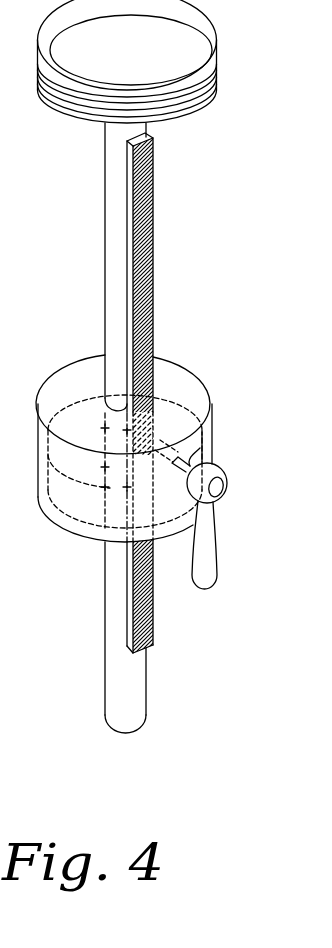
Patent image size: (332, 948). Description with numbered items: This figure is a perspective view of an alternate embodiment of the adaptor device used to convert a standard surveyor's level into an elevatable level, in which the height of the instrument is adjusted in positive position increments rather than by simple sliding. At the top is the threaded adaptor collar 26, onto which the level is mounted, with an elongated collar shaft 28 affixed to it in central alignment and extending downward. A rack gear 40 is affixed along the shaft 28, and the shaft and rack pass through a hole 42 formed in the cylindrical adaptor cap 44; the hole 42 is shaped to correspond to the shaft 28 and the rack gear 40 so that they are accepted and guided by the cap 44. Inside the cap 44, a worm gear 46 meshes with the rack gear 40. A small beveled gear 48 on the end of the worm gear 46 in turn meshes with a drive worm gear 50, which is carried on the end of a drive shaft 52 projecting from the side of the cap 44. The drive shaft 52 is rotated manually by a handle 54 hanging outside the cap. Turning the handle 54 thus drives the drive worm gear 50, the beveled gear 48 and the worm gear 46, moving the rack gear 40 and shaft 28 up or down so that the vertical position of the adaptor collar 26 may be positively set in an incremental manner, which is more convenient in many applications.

The adaptor collar 26 is at (215, 61).
The collar shaft 28 is at (107, 231).
The rack gear 40 is at (153, 268).
The hole 42 is at (113, 396).
The adaptor cap 44 is at (205, 375).
The worm gear 46 is at (165, 401).
The beveled gear 48 is at (125, 428).
The drive worm gear 50 is at (125, 467).
The drive shaft 52 is at (198, 446).
The handle 54 is at (216, 543).